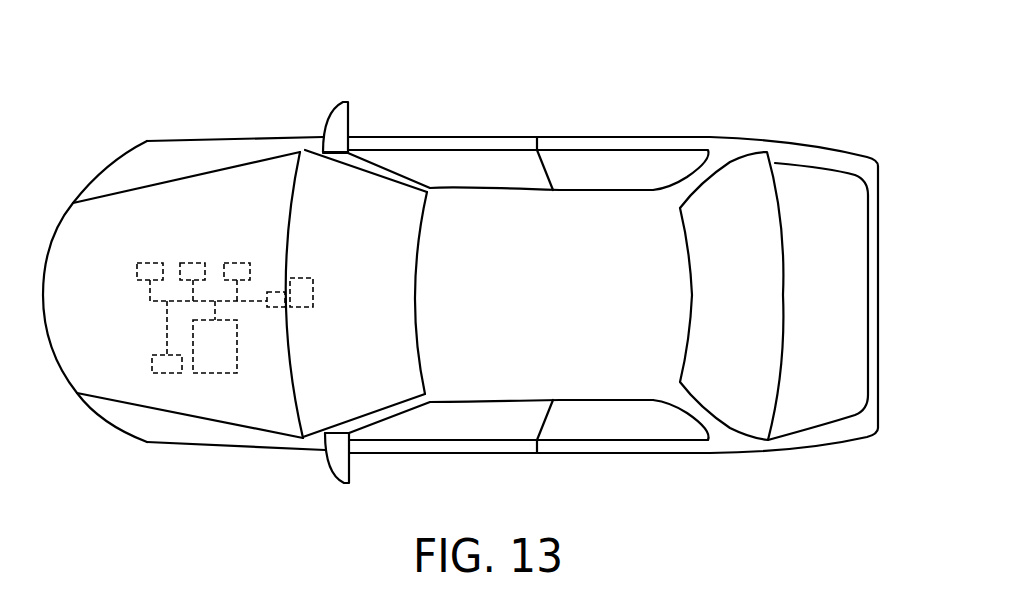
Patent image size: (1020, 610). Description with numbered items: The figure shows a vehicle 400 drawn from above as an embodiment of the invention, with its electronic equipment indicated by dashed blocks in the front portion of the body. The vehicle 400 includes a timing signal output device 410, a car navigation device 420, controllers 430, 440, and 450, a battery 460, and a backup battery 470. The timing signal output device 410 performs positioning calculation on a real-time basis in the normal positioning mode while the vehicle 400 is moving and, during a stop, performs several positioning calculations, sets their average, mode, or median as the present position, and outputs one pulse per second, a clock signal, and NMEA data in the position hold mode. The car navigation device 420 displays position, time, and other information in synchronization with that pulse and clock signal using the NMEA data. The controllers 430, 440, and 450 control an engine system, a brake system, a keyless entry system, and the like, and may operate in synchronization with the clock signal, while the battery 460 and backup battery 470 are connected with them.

The vehicle 400 is at (485, 62).
The timing signal output device 410 is at (270, 309).
The car navigation device 420 is at (302, 277).
The controller 430 is at (150, 262).
The controller 440 is at (194, 262).
The controller 450 is at (240, 262).
The battery 460 is at (222, 375).
The backup battery 470 is at (151, 366).